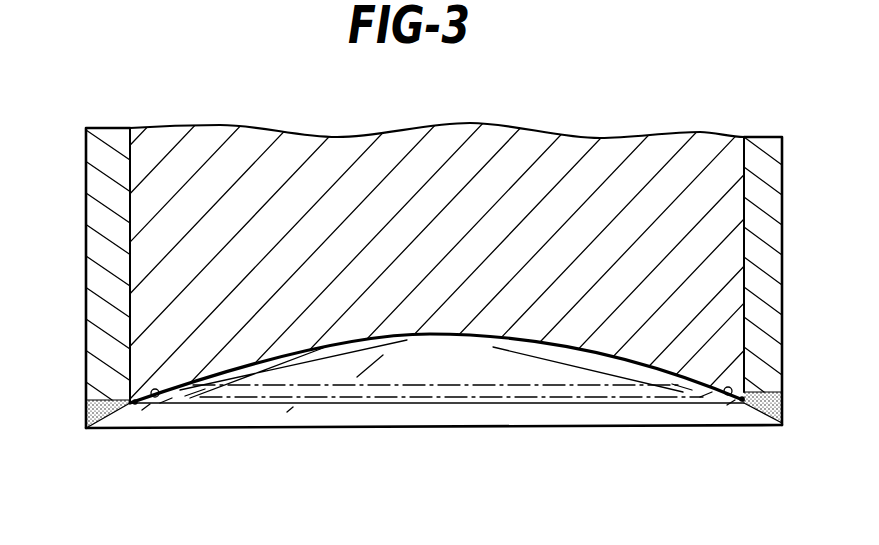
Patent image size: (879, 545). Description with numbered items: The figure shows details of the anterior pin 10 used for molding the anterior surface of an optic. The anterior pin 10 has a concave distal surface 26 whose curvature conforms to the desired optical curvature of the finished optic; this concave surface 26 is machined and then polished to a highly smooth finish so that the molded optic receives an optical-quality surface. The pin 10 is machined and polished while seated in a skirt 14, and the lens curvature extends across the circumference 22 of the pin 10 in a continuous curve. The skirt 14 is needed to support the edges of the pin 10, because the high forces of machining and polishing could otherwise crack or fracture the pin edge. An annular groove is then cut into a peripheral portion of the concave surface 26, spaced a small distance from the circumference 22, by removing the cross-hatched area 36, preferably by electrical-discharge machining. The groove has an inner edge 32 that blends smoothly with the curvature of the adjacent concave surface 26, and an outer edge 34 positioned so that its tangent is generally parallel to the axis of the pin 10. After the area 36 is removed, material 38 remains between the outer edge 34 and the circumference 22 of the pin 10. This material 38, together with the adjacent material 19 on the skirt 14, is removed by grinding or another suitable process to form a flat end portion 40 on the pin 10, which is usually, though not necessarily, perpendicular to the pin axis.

The anterior pin 10 is at (540, 131).
The skirt 14 is at (113, 131).
The circumference 22 is at (131, 127).
The adjacent material 19 is at (88, 413).
The concave distal surface 26 is at (435, 336).
The inner edge 32 is at (185, 396).
The outer edge 34 is at (142, 410).
The cross-hatched area 36 is at (160, 404).
The material 38 is at (133, 407).
The flat end portion 40 is at (152, 392).